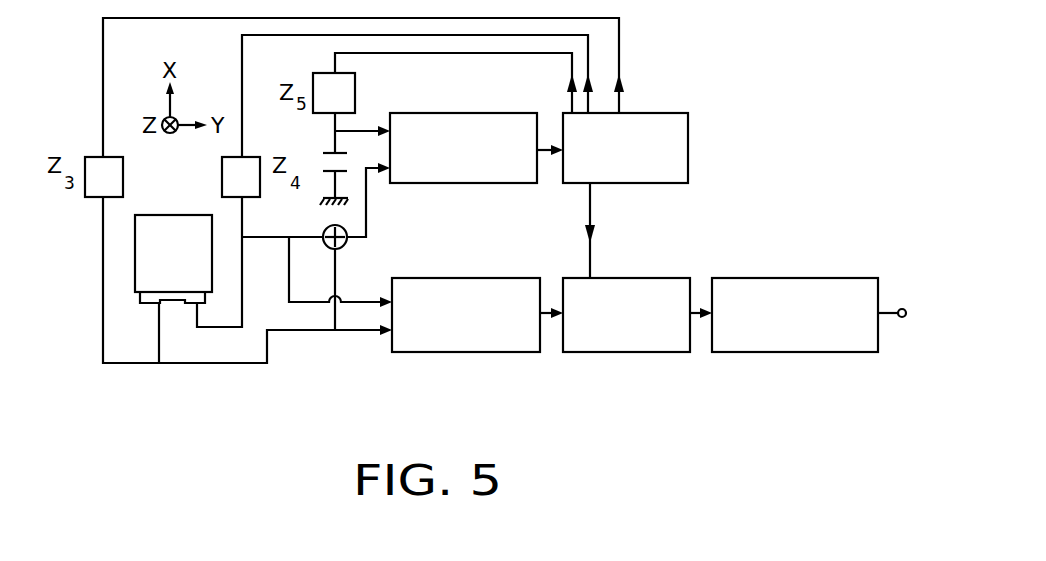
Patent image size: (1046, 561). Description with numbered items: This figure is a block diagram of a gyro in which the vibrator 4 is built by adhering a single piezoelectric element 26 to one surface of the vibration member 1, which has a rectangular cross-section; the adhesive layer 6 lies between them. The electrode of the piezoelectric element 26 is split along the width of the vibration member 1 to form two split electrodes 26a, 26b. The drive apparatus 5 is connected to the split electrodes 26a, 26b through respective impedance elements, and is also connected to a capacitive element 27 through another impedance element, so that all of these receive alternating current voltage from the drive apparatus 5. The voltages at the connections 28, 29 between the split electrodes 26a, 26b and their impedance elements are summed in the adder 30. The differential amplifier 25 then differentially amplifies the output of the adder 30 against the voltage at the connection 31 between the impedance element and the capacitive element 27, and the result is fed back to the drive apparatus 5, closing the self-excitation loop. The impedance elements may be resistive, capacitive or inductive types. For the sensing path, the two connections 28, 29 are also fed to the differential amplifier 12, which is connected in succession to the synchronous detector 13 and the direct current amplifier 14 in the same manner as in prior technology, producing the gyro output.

The vibration member 1 is at (195, 222).
The vibrator 4 is at (135, 232).
The drive apparatus 5 is at (664, 113).
The adhesive layer 6 is at (163, 204).
The differential amplifier 12 is at (458, 353).
The synchronous detector 13 is at (627, 353).
The direct current amplifier 14 is at (785, 353).
The differential amplifier 25 is at (490, 112).
The piezoelectric element 26 is at (176, 312).
The split electrode 26a is at (151, 305).
The split electrode 26b is at (197, 305).
The capacitive element 27 is at (322, 172).
The connection 28 is at (160, 364).
The connection 29 is at (245, 237).
The adder 30 is at (344, 246).
The connection 31 is at (342, 131).